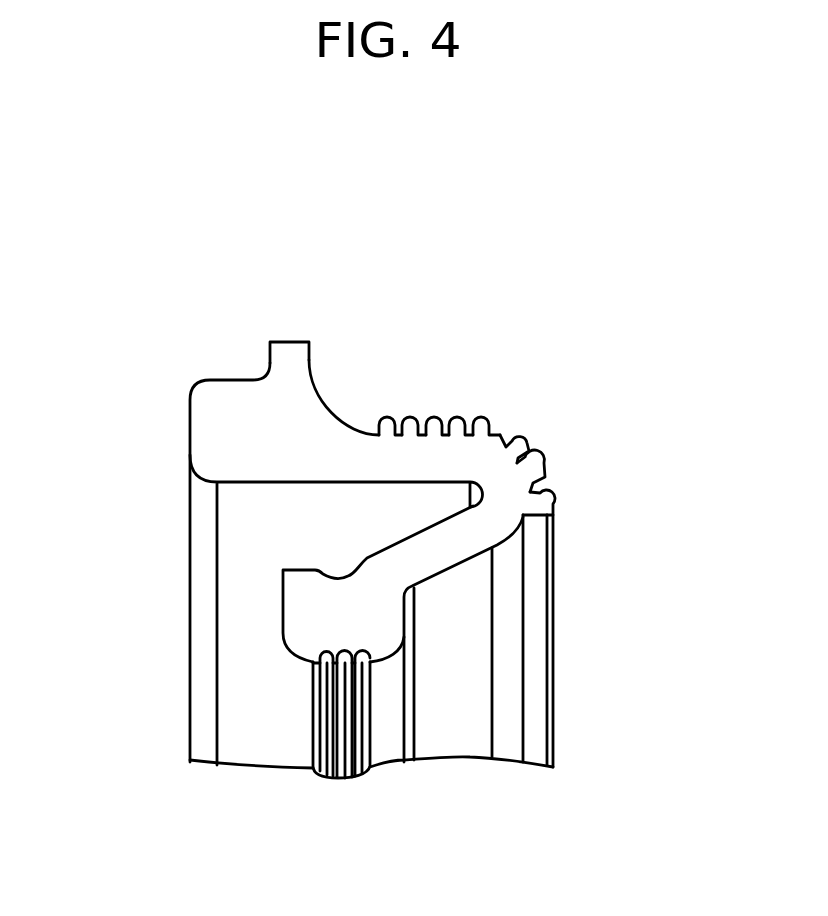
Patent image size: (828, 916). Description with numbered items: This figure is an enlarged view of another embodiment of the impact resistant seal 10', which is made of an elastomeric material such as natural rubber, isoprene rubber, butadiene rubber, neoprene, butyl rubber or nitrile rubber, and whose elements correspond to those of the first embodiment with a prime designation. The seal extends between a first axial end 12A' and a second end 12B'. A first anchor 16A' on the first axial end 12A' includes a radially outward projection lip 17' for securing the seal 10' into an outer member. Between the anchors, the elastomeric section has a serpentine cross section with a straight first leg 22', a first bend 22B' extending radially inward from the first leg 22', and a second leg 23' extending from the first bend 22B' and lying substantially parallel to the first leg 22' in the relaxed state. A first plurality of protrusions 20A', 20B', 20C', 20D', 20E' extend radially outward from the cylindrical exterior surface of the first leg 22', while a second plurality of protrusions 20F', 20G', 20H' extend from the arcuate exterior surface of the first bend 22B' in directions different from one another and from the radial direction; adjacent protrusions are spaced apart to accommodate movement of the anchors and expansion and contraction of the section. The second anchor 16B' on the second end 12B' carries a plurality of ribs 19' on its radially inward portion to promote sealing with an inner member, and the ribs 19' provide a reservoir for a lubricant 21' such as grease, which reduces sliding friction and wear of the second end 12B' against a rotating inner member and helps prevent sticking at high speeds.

The seal 10' is at (370, 512).
The first axial end 12A' is at (367, 509).
The second end 12B' is at (437, 684).
The first anchor 16A' is at (291, 562).
The second anchor 16B' is at (371, 667).
The radially outward projection lip 17' is at (263, 330).
The ribs 19' is at (359, 770).
The protrusion 20A' is at (390, 344).
The protrusion 20B' is at (428, 371).
The protrusion 20C' is at (471, 364).
The protrusion 20D' is at (507, 383).
The protrusion 20E' is at (539, 411).
The protrusion 20F' is at (597, 443).
The protrusion 20G' is at (583, 471).
The protrusion 20H' is at (606, 518).
The lubricant 21' is at (337, 765).
The first leg 22' is at (355, 416).
The first bend 22B' is at (544, 626).
The second leg 23' is at (456, 609).